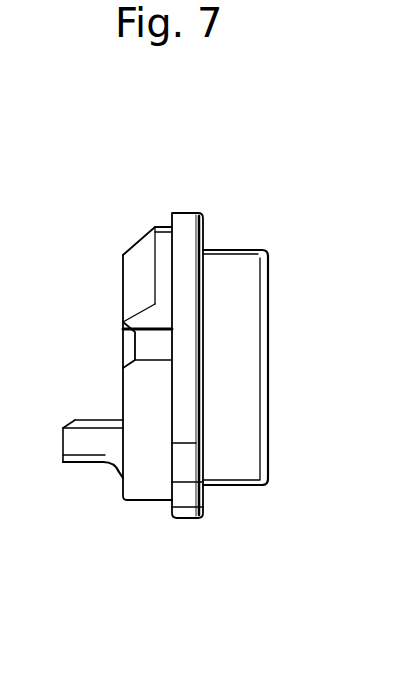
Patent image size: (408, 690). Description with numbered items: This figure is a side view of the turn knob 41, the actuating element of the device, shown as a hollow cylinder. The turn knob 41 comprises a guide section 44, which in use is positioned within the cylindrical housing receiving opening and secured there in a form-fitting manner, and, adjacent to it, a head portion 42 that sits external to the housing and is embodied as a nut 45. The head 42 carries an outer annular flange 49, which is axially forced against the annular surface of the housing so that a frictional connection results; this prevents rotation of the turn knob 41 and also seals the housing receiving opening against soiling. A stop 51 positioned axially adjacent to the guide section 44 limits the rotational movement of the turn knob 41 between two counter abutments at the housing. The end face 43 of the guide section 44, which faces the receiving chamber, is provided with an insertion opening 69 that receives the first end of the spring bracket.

The turn knob 41 is at (118, 222).
The head portion 42 is at (238, 487).
The end face 43 is at (122, 293).
The guide section 44 is at (138, 503).
The nut 45 is at (242, 270).
The outer annular flange 49 is at (170, 218).
The stop 51 is at (82, 447).
The insertion opening 69 is at (158, 342).